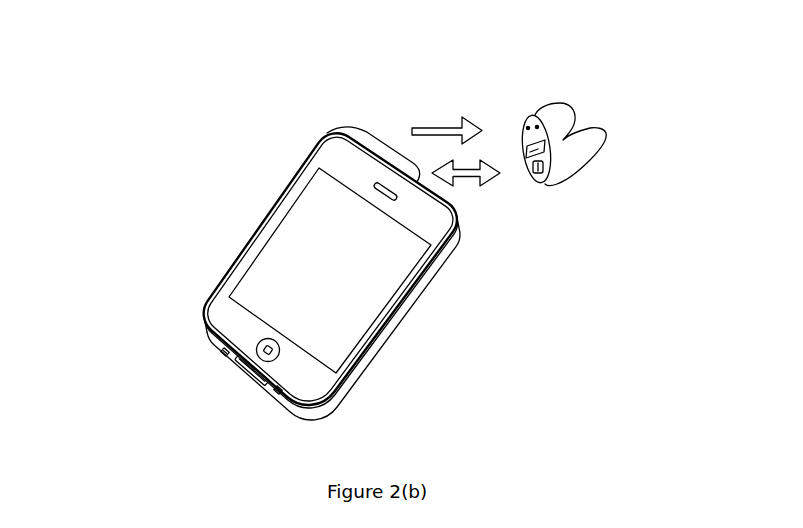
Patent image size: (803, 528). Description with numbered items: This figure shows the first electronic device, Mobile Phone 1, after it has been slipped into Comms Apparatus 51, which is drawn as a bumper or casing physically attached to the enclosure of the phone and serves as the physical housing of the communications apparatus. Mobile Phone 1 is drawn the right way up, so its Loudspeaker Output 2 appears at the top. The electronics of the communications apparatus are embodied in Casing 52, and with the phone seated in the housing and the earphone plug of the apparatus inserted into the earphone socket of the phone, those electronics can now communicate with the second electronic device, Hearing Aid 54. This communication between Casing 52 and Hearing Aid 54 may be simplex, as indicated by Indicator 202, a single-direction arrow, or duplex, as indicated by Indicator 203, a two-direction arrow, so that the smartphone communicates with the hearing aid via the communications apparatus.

The mobile phone 1 is at (128, 227).
The comms apparatus 51 is at (138, 152).
The loudspeaker output 2 is at (370, 182).
The casing 52 is at (363, 130).
The indicator 202 is at (476, 120).
The indicator 203 is at (495, 177).
The hearing aid 54 is at (627, 193).